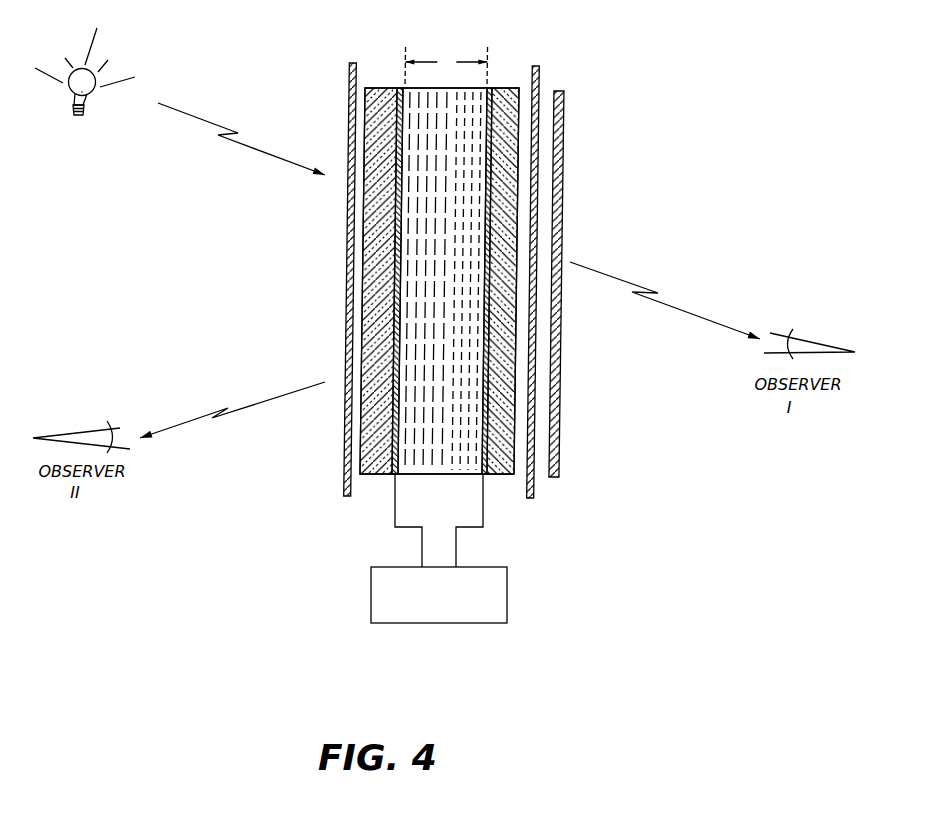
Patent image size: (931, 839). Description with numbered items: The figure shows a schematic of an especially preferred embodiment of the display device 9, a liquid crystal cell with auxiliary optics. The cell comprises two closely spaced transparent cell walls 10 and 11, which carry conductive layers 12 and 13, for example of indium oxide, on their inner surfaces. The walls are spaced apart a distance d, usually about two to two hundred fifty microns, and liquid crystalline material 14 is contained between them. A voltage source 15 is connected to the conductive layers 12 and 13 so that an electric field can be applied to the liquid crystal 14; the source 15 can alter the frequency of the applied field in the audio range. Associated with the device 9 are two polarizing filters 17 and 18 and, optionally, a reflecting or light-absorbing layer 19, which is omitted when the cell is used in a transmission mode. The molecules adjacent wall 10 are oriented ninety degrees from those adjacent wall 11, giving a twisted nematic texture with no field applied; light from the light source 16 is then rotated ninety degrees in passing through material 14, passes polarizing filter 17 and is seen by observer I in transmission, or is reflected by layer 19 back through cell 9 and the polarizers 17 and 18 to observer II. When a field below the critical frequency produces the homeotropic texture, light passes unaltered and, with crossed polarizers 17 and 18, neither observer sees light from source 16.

The display device 9 is at (507, 522).
The cell wall 10 is at (378, 450).
The cell wall 11 is at (495, 477).
The conductive layer 12 is at (398, 242).
The conductive layer 13 is at (490, 165).
The liquid crystalline material 14 is at (448, 458).
The voltage source 15 is at (508, 608).
The light source 16 is at (107, 47).
The polarizing filter 17 is at (539, 70).
The polarizing filter 18 is at (350, 67).
The reflecting or light-absorbing layer 19 is at (562, 425).